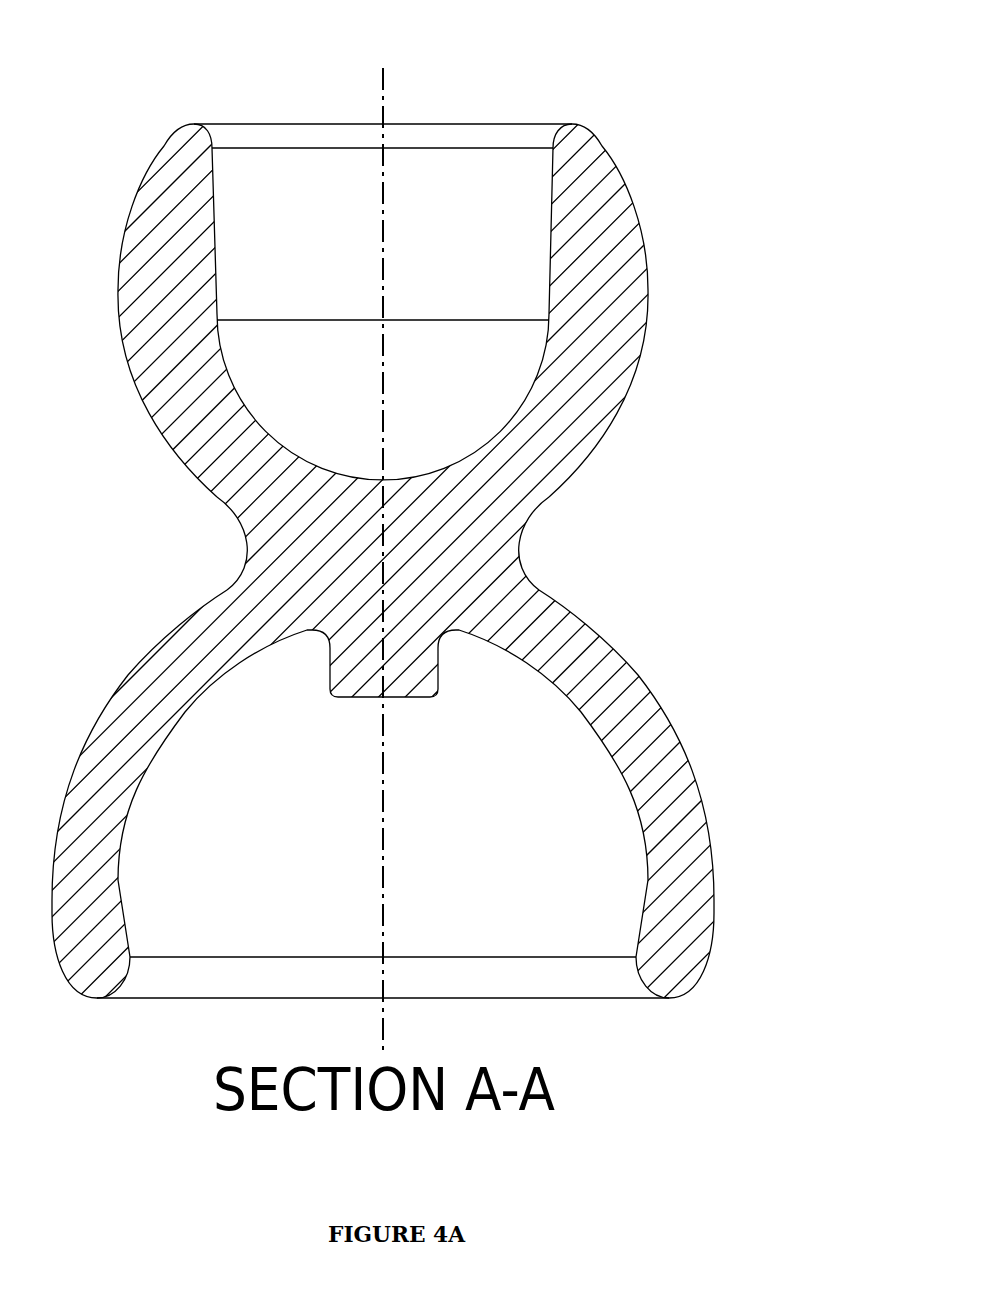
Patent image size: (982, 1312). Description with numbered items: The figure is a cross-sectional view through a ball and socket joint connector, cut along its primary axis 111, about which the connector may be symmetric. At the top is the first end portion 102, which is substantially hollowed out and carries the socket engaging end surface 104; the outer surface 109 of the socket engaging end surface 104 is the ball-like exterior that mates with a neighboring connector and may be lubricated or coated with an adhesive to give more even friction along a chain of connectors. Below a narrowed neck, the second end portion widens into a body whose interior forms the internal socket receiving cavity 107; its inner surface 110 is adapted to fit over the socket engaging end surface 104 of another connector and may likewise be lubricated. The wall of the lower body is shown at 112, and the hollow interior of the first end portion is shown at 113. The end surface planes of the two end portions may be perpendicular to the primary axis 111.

The first end portion 102 is at (575, 126).
The socket engaging end surface 104 is at (631, 198).
The internal socket receiving cavity 107 is at (118, 890).
The outer surface 109 is at (652, 341).
The inner surface 110 is at (618, 764).
The primary axis 111 is at (383, 124).
The lower outer wall 112 is at (653, 688).
The upper cavity 113 is at (215, 243).